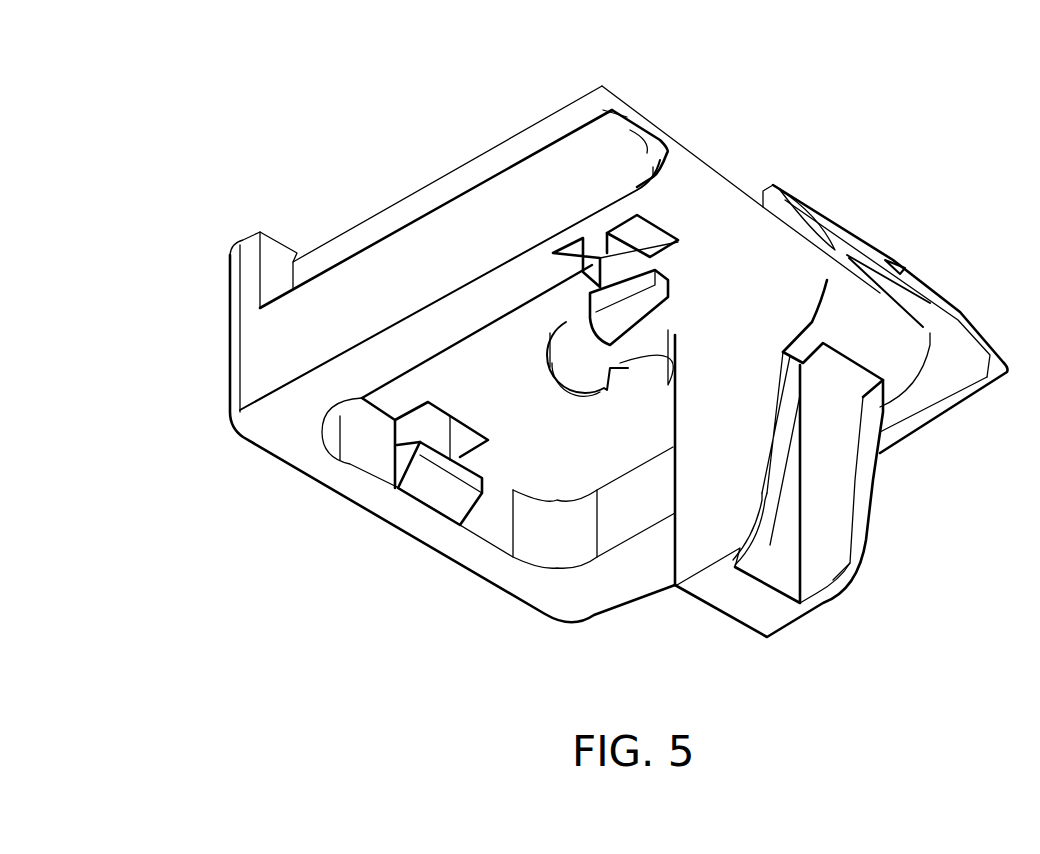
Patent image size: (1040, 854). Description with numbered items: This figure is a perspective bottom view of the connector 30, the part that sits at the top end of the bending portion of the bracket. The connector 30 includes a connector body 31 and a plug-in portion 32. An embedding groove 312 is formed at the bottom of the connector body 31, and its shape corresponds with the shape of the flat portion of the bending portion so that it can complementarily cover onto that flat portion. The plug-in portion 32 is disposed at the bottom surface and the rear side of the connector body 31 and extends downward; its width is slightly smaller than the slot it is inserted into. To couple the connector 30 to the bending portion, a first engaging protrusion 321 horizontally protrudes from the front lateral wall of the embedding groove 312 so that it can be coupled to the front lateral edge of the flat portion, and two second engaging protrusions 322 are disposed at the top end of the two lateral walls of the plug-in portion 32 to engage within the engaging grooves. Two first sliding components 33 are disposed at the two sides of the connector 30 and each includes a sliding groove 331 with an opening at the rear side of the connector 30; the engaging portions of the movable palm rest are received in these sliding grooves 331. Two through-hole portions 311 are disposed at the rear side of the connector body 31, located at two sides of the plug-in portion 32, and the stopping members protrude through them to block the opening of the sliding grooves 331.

The connector 30 is at (402, 143).
The connector body 31 is at (252, 343).
The through-hole portion 311 is at (630, 230).
The embedding groove 312 is at (556, 477).
The plug-in portion 32 is at (747, 450).
The first engaging protrusion 321 is at (433, 490).
The second engaging protrusion 322 is at (638, 308).
The first sliding component 33 is at (566, 110).
The sliding groove 331 is at (622, 110).